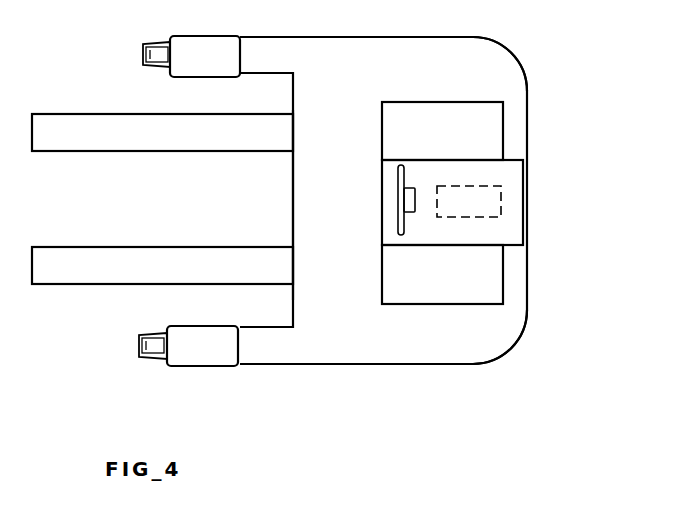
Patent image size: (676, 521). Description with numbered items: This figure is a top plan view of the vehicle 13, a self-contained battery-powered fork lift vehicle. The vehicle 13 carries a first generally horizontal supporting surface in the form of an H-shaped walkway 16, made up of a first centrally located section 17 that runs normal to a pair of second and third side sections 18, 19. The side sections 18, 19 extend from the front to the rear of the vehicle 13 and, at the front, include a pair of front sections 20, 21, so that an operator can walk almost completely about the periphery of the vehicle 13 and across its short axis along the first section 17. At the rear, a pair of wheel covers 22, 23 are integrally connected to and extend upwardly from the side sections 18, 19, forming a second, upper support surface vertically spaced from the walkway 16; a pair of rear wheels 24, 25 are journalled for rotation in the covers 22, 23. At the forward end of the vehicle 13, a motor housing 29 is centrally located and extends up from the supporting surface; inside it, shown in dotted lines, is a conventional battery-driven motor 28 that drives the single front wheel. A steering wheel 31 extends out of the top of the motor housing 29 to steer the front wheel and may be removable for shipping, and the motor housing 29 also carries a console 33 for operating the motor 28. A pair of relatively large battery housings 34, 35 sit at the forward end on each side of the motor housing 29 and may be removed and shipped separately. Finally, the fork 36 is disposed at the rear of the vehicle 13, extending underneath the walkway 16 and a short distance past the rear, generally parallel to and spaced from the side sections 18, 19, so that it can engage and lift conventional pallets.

The vehicle 13 is at (409, 366).
The H-shaped walkway 16 is at (338, 346).
The first centrally located section 17 is at (349, 210).
The second side section 18 is at (290, 358).
The third side section 19 is at (300, 66).
The front section 20 is at (497, 333).
The front section 21 is at (502, 80).
The wheel cover 22 is at (207, 352).
The wheel cover 23 is at (199, 49).
The rear wheel 24 is at (147, 360).
The rear wheel 25 is at (142, 44).
The motor 28 is at (509, 208).
The motor housing 29 is at (527, 181).
The steering wheel 31 is at (406, 178).
The console 33 is at (390, 192).
The battery housing 34 is at (503, 268).
The battery housing 35 is at (503, 138).
The fork 36 is at (93, 285).